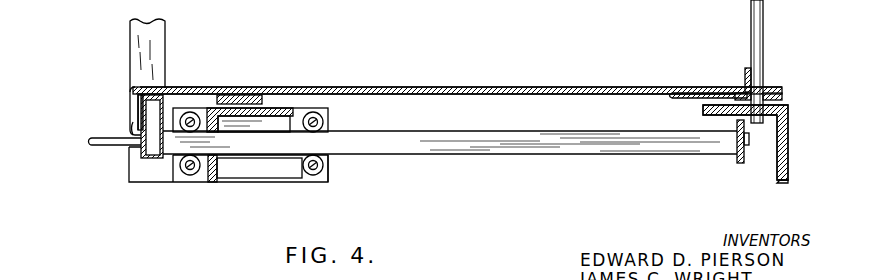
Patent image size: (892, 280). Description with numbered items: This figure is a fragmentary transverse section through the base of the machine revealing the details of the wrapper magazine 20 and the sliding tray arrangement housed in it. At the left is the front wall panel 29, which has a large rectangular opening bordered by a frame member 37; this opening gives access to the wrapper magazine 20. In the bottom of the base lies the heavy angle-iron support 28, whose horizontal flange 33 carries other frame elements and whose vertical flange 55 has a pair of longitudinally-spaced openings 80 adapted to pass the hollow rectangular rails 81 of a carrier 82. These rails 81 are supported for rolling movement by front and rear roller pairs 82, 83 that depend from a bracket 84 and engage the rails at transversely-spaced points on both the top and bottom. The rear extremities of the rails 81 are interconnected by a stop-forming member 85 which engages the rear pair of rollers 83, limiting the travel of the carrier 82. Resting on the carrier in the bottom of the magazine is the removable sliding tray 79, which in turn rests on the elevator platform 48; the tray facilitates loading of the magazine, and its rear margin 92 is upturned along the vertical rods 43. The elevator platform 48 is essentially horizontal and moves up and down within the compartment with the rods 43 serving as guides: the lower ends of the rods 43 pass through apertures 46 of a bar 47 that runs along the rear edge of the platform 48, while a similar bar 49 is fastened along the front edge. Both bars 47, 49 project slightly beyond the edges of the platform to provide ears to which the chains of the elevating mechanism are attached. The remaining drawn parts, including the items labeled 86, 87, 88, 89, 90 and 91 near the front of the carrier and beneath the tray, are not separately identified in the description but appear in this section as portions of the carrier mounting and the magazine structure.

The wrapper magazine 20 is at (540, 82).
The angle-iron support 28 is at (220, 164).
The front wall panel 29 is at (789, 142).
The horizontal flange 33 is at (265, 124).
The frame member 37 is at (159, 52).
The vertical rod 43 is at (765, 50).
The aperture 46 is at (766, 96).
The bar 47 is at (785, 96).
The elevator platform 48 is at (500, 97).
The bar 49 is at (243, 100).
The vertical flange 55 is at (240, 170).
The sliding tray 79 is at (425, 88).
The opening 80 is at (217, 149).
The hollow rectangular rail 81 is at (598, 140).
The carrier 82 is at (193, 117).
The rear roller pair 83 is at (314, 114).
The bracket 84 is at (298, 178).
The stop-forming member 85 is at (739, 164).
The housing 86 is at (152, 162).
The actuating rod 87 is at (103, 146).
The bracket flange 88 is at (132, 101).
The end block 89 is at (175, 102).
The lip 90 is at (136, 133).
The strip 91 is at (687, 90).
The rear margin 92 is at (746, 72).